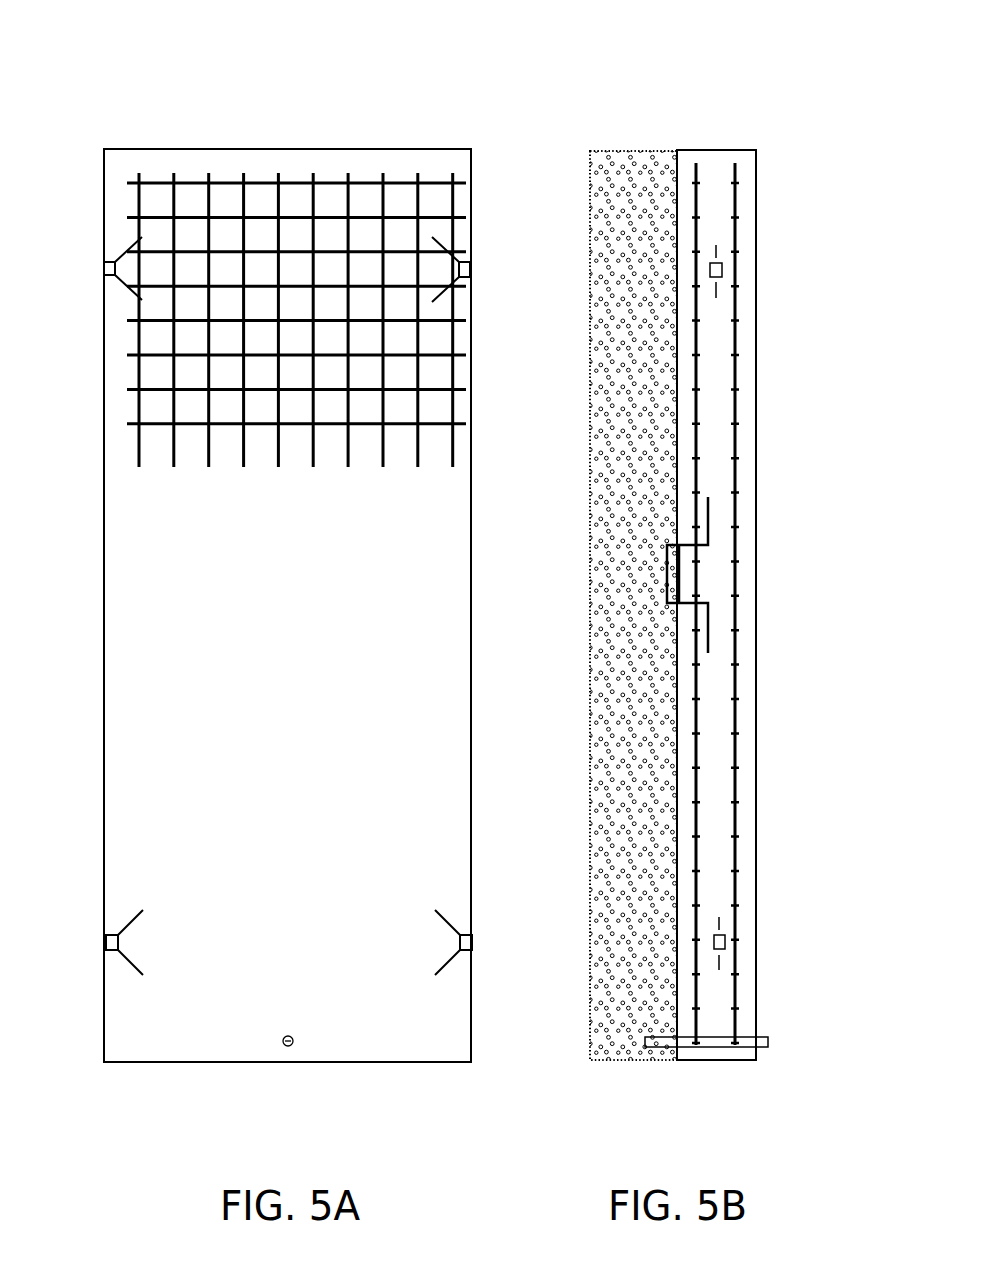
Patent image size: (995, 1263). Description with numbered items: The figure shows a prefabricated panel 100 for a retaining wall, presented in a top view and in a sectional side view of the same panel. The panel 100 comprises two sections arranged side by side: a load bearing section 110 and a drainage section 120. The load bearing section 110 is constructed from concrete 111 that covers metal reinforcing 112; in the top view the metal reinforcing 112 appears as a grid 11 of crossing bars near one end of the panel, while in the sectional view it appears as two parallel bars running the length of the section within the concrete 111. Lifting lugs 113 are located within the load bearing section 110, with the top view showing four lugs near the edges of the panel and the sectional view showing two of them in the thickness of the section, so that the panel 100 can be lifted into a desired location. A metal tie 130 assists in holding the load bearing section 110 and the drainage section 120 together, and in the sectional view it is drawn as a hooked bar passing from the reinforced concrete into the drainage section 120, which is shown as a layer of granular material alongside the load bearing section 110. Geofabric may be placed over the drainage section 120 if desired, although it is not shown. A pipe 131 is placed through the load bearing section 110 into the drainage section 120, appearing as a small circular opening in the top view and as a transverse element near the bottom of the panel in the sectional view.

In FIG. 5A, the prefabricated panel 100 is at (294, 565).
In FIG. 5B, the prefabricated panel 100 is at (694, 567).
In FIG. 5A, the load bearing section 110 is at (135, 116).
In FIG. 5B, the load bearing section 110 is at (769, 232).
In FIG. 5A, the concrete 111 is at (226, 163).
In FIG. 5B, the concrete 111 is at (752, 612).
In FIG. 5A, the reinforcing mesh grid 11 is at (323, 183).
In FIG. 5B, the metal reinforcing 112 is at (737, 747).
In FIG. 5A, the lifting lugs 113 is at (107, 268).
In FIG. 5B, the lifting lugs 113 is at (725, 940).
In FIG. 5B, the drainage section 120 is at (580, 194).
In FIG. 5B, the metal tie 130 is at (708, 518).
In FIG. 5A, the pipe 131 is at (294, 1044).
In FIG. 5B, the pipe 131 is at (760, 1043).